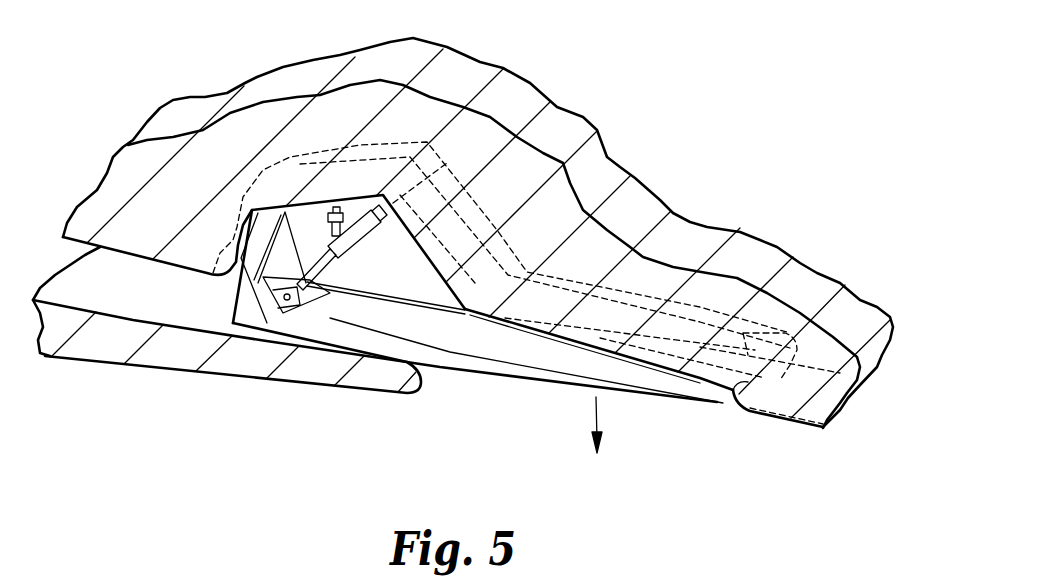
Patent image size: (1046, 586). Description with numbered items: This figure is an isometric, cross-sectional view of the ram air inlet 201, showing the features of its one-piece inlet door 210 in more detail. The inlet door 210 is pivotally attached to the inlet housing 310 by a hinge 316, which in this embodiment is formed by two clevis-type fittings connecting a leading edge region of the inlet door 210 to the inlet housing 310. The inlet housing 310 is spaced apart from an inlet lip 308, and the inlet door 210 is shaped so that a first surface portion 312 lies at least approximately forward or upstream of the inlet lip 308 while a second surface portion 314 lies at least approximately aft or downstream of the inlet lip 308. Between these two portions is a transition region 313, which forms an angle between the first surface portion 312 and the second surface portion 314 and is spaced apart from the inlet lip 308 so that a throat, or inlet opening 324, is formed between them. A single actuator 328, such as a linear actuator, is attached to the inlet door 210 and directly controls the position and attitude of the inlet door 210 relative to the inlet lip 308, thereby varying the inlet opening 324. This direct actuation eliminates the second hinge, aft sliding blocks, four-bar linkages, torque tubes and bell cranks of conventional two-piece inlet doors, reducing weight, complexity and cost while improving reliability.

The ram air inlet 201 is at (567, 460).
The ram air inlet door 210 is at (642, 394).
The inlet lip 308 is at (428, 380).
The inlet housing 310 is at (793, 424).
The first surface portion 312 is at (557, 372).
The transition region 313 is at (457, 300).
The second surface portion 314 is at (370, 316).
The hinge 316 is at (728, 403).
The inlet opening 324 is at (418, 388).
The actuator 328 is at (327, 281).